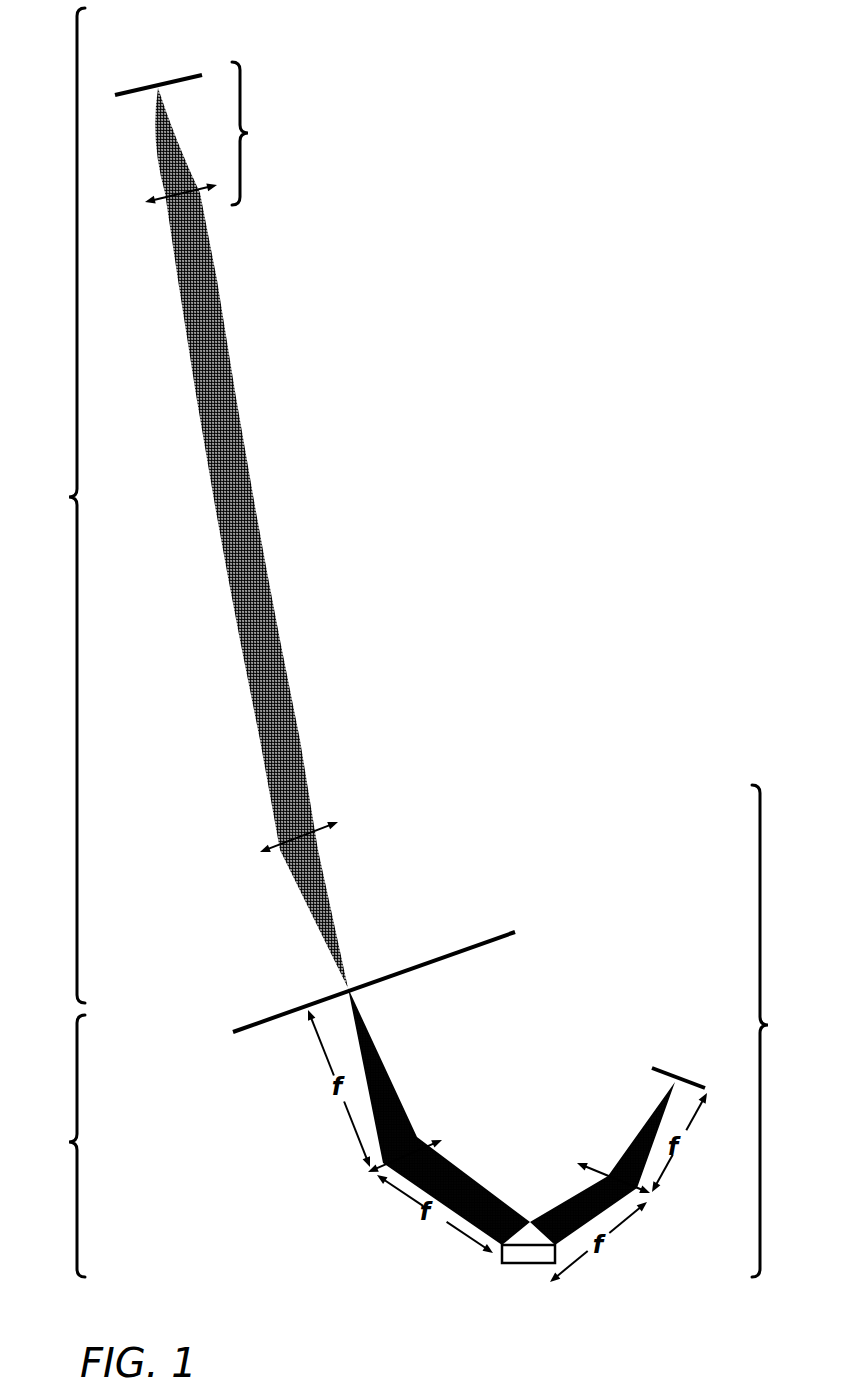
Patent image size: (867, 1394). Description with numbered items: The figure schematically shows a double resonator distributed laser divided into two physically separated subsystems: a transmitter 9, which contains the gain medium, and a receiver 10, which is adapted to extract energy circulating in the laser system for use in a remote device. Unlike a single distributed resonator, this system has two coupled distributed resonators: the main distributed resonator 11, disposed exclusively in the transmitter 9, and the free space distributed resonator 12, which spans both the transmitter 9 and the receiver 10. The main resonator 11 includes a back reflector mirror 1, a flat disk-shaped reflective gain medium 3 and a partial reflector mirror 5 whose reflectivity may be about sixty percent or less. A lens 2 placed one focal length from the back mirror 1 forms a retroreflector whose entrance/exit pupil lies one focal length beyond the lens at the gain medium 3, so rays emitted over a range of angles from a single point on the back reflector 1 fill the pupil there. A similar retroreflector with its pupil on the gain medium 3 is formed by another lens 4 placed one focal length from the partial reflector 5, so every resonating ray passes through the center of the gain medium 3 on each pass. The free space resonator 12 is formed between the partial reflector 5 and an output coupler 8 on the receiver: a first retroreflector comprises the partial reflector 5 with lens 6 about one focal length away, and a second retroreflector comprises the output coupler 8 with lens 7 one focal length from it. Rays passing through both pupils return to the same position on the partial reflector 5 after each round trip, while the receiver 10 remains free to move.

The back reflector mirror 1 is at (652, 1066).
The lens 2 is at (579, 1160).
The gain medium 3 is at (498, 1266).
The lens 4 is at (449, 1135).
The partial reflector mirror 5 is at (290, 1018).
The lens 6 is at (338, 820).
The lens 7 is at (150, 205).
The output coupler 8 is at (197, 72).
The transmitter 9 is at (771, 1031).
The receiver 10 is at (262, 133).
The main distributed resonator 11 is at (60, 1146).
The free space distributed resonator 12 is at (60, 505).